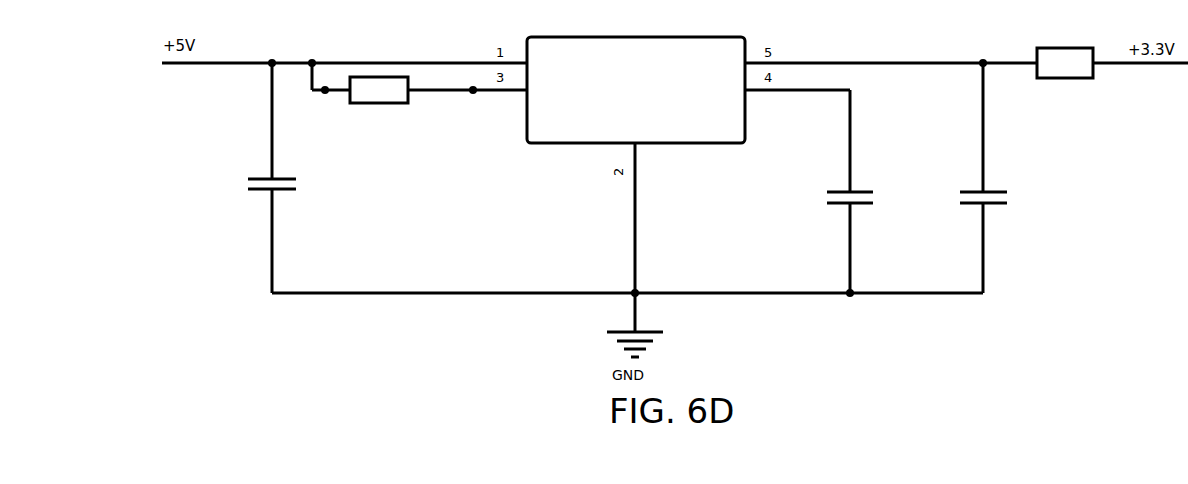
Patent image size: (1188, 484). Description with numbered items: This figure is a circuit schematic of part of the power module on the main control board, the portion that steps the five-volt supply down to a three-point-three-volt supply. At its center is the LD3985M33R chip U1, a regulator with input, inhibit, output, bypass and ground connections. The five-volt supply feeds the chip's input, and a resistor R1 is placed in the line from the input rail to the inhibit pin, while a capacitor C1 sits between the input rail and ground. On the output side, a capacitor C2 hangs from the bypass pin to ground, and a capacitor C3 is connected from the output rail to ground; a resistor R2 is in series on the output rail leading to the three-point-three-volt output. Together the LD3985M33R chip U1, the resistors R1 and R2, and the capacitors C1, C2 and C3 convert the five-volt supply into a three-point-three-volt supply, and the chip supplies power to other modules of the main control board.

The LD3985M33R chip U1 is at (636, 97).
The resistor R1 is at (379, 105).
The resistor R2 is at (1065, 54).
The capacitor C1 is at (283, 178).
The capacitor C2 is at (862, 191).
The capacitor C3 is at (996, 178).